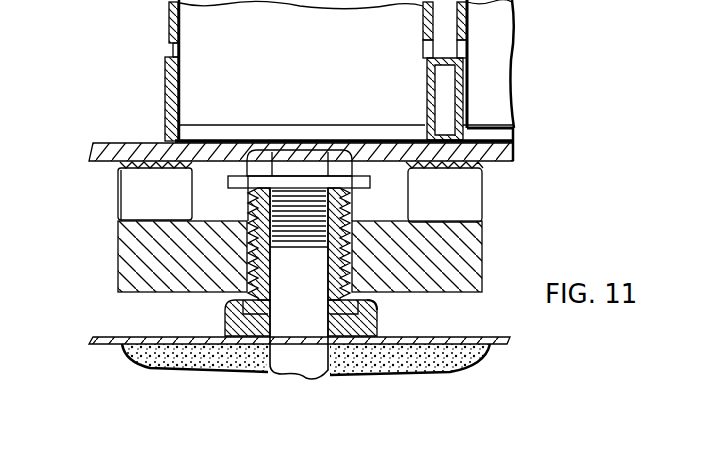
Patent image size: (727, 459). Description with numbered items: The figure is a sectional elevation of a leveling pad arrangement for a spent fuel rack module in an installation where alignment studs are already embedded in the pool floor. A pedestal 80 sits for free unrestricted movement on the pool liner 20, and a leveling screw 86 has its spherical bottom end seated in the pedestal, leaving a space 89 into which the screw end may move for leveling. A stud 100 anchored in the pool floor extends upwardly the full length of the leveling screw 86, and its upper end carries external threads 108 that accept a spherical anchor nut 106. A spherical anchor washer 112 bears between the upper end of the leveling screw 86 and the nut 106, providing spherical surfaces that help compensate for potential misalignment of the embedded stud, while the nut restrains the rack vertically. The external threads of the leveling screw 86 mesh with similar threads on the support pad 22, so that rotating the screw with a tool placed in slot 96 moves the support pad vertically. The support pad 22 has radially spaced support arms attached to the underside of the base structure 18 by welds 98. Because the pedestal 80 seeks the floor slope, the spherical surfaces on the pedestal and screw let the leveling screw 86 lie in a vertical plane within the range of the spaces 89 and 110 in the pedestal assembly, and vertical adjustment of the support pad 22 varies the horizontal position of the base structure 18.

The base structure 18 is at (500, 153).
The pool liner 20 is at (466, 337).
The leveling pad 22 is at (468, 265).
The pedestal 80 is at (315, 318).
The leveling screw 86 is at (350, 208).
The space 89 is at (237, 311).
The slot 96 is at (468, 208).
The welds 98 is at (483, 173).
The stud 100 is at (378, 304).
The spherical anchor nut 106 is at (262, 148).
The external threads 108 is at (303, 240).
The space 110 is at (252, 212).
The spherical anchor washer 112 is at (227, 179).